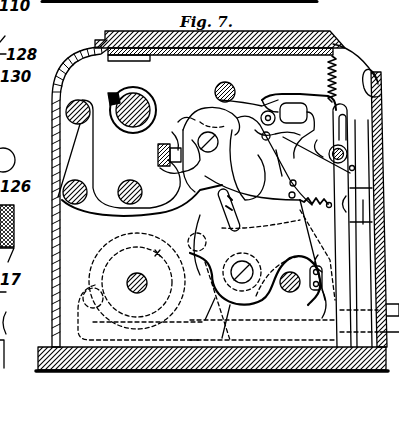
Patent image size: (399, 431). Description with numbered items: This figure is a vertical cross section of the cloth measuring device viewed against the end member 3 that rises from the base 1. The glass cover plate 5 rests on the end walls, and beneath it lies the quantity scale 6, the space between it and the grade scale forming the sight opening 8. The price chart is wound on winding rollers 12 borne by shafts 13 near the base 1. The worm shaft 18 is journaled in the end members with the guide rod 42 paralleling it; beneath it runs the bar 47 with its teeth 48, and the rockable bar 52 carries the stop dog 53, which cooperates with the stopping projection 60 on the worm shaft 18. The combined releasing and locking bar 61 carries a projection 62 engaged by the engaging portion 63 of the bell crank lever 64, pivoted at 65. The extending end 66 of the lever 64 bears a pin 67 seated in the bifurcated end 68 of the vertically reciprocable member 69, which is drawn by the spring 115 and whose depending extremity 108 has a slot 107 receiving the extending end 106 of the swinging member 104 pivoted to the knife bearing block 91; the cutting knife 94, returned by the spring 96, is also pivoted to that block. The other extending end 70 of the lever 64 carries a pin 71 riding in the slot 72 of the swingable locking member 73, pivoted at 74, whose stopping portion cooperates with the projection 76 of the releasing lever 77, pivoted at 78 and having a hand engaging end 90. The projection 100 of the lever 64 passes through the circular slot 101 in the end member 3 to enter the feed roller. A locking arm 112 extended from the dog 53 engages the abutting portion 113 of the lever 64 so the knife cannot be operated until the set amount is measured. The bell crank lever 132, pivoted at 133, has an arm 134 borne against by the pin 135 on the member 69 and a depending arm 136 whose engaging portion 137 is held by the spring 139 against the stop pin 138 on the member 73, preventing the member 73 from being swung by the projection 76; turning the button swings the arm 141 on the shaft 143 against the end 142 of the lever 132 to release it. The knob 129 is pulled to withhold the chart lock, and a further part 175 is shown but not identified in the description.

The base 1 is at (125, 371).
The end member 3 is at (70, 252).
The glass cover plate 5 is at (293, 31).
The quantity scale 6 is at (156, 56).
The longitudinal sight opening 8 is at (186, 35).
The winding rollers 12 is at (267, 369).
The shafts 13 is at (137, 293).
The worm shaft 18 is at (150, 105).
The guide rod 42 is at (67, 108).
The bar 47 is at (122, 191).
The teeth 48 is at (190, 206).
The rockable bar 52 is at (63, 196).
The stop dog 53 is at (90, 163).
The stopping projection 60 is at (112, 96).
The combined releasing and locking bar 61 is at (158, 158).
The projection 62 is at (161, 173).
The engaging portion 63 is at (167, 138).
The bell crank lever 64 is at (271, 160).
The pivot 65 is at (204, 161).
The extending end 66 is at (260, 124).
The pin 67 is at (292, 108).
The bifurcated end 68 is at (306, 104).
The vertically reciprocable member 69 is at (330, 225).
The extending end 70 is at (252, 185).
The pin 71 is at (275, 172).
The slot 72 is at (238, 213).
The swingable locking member 73 is at (236, 262).
The pivot 74 is at (255, 296).
The projection 76 is at (280, 286).
The releasing lever 77 is at (205, 348).
The pivot 78 is at (85, 302).
The hand engaging end 90 is at (388, 372).
The knife bearing block 91 is at (358, 210).
The cutting knife 94 is at (360, 67).
The spring 96 is at (358, 1).
The projection 100 is at (188, 120).
The circularly formed slot 101 is at (234, 98).
The swinging member 104 is at (316, 304).
The extending end 106 is at (349, 348).
The slot 107 is at (316, 348).
The depending extremity 108 is at (340, 31).
The locking arm 112 is at (135, 214).
The abutting portion 113 is at (196, 185).
The spring 115 is at (335, 82).
The knob 129 is at (56, 166).
The bell crank lever 132 is at (293, 188).
The pivot 133 is at (352, 154).
The arm 134 is at (318, 205).
The pin 135 is at (363, 169).
The depending arm 136 is at (247, 245).
The engaging portion 137 is at (182, 244).
The stop pin 138 is at (262, 330).
The spring 139 is at (293, 200).
The arm 141 is at (273, 141).
The end 142 is at (346, 120).
The shaft 143 is at (313, 134).
The link 175 is at (321, 250).